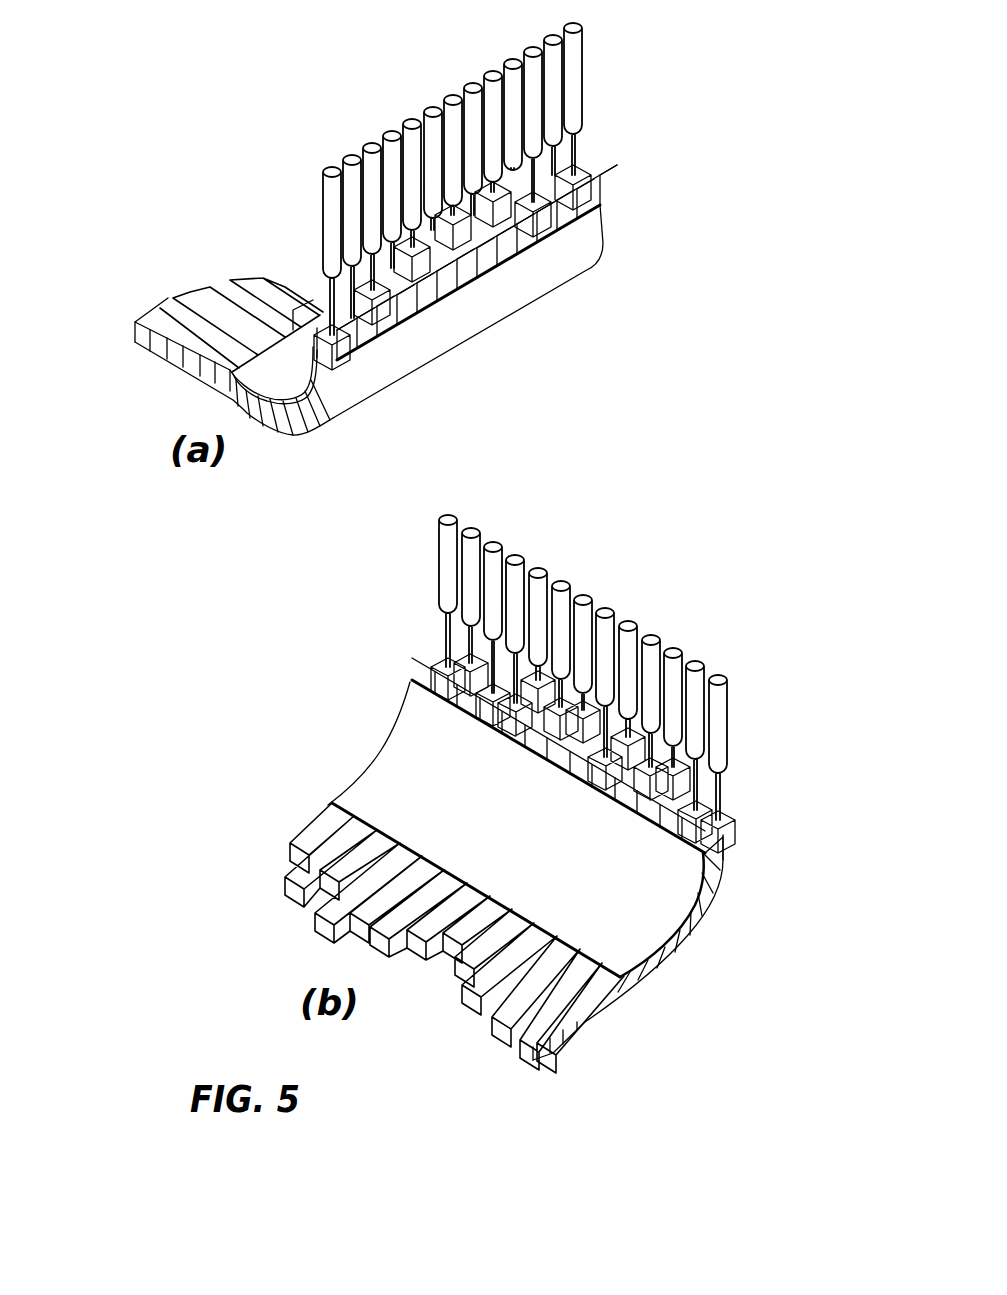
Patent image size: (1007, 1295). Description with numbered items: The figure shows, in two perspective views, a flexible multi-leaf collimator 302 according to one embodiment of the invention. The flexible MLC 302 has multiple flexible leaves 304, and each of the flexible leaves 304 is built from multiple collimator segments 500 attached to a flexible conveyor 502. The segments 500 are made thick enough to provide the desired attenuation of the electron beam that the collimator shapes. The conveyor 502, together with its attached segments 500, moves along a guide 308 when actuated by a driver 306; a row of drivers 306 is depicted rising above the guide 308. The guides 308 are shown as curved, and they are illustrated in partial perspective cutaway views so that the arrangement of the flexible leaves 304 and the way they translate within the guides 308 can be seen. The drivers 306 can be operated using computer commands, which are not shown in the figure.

The flexible multi-leaf collimator 302 is at (122, 60).
The flexible leaves 304 is at (112, 333).
The driver 306 is at (584, 82).
The guide 308 is at (602, 207).
The collimator segments 500 is at (136, 344).
The flexible conveyor 502 is at (183, 300).